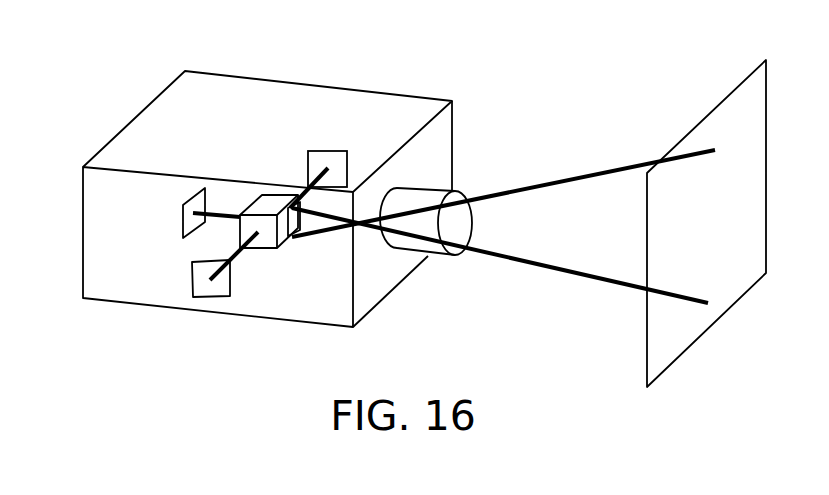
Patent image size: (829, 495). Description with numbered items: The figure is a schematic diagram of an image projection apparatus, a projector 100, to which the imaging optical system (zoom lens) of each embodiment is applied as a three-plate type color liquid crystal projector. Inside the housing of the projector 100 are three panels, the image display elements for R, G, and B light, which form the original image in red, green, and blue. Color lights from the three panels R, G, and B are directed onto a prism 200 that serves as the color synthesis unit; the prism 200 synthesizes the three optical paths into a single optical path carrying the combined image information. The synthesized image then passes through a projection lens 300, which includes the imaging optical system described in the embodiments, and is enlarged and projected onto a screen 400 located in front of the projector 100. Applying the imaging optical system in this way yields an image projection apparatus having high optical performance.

The projector 100 is at (132, 122).
The green panel G is at (183, 223).
The blue panel B is at (332, 150).
The red panel R is at (192, 280).
The prism 200 is at (277, 252).
The projection lens 300 is at (432, 250).
The screen 400 is at (735, 128).